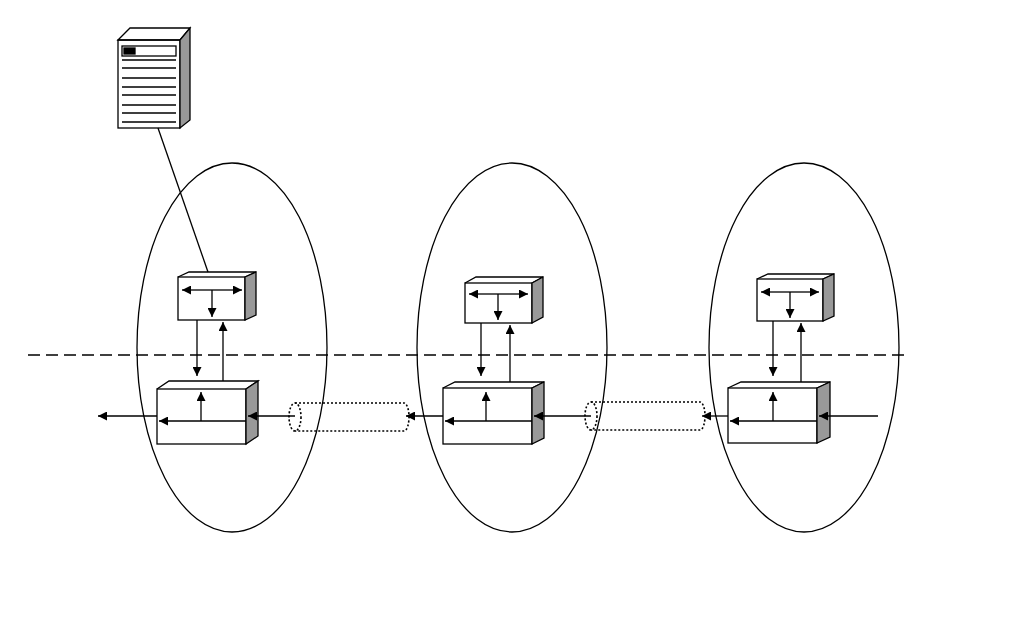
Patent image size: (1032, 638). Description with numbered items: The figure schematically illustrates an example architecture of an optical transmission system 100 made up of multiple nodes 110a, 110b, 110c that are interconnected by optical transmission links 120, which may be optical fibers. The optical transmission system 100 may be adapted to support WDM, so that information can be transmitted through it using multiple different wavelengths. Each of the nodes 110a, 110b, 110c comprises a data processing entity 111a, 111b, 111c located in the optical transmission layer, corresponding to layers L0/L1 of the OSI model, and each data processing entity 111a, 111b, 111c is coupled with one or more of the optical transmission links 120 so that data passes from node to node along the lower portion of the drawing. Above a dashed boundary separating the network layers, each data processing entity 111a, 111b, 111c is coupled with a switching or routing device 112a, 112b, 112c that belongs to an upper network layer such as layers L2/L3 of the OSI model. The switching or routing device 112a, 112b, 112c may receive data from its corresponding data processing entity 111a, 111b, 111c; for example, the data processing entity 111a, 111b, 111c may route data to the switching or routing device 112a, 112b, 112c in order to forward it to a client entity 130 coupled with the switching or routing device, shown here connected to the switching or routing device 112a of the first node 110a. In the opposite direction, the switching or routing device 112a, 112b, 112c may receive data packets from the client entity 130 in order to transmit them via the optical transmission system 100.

The optical transmission system 100 is at (475, 303).
The node 110a is at (236, 164).
The node 110b is at (514, 164).
The node 110c is at (806, 164).
The data processing entity 111a is at (206, 444).
The data processing entity 111b is at (468, 444).
The data processing entity 111c is at (752, 443).
The switching or routing device 112a is at (220, 271).
The switching or routing device 112b is at (507, 277).
The switching or routing device 112c is at (797, 274).
The optical transmission link 120 is at (338, 431).
The client entity 130 is at (185, 78).